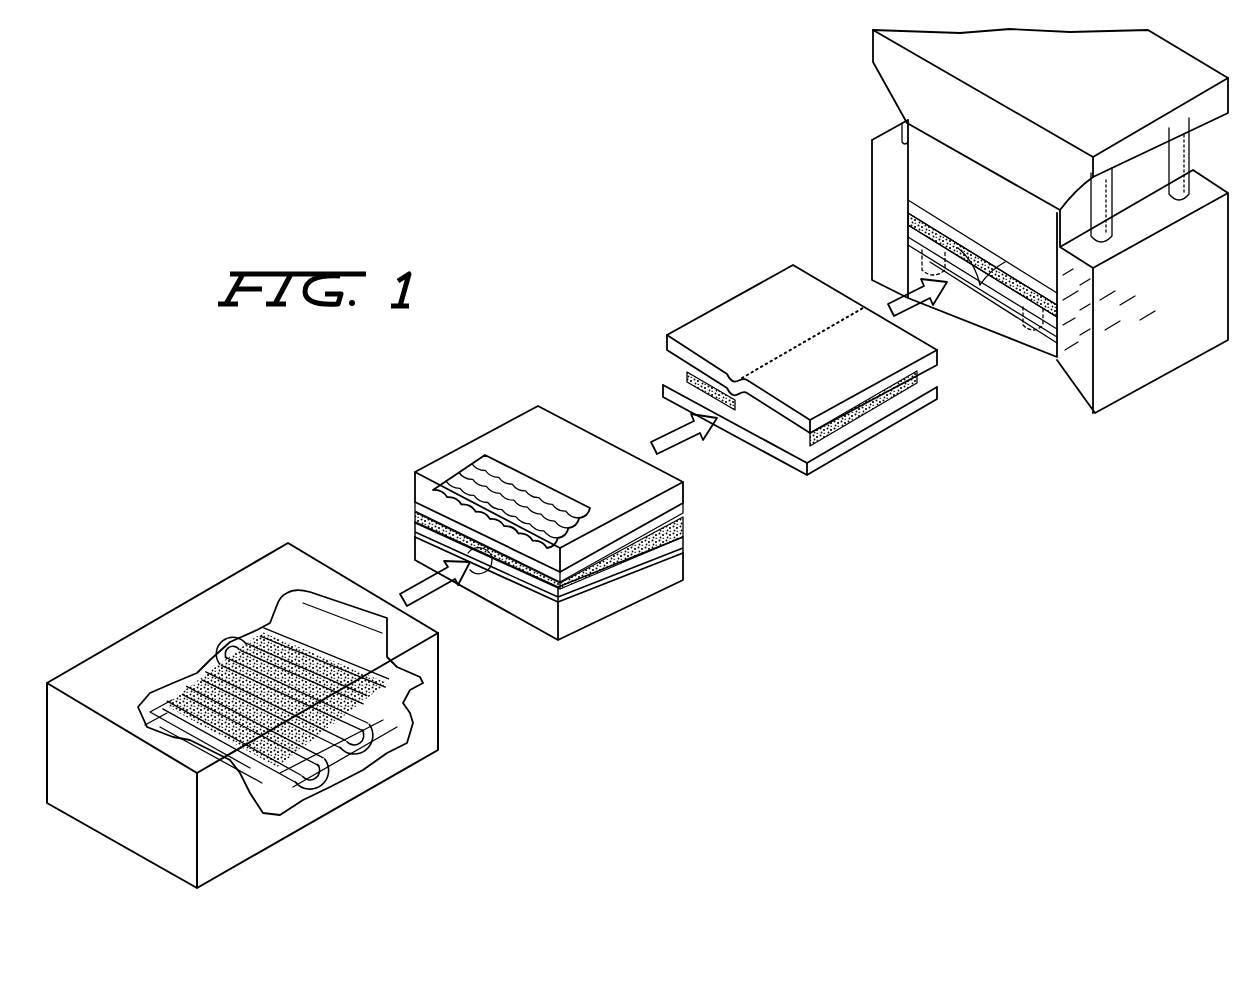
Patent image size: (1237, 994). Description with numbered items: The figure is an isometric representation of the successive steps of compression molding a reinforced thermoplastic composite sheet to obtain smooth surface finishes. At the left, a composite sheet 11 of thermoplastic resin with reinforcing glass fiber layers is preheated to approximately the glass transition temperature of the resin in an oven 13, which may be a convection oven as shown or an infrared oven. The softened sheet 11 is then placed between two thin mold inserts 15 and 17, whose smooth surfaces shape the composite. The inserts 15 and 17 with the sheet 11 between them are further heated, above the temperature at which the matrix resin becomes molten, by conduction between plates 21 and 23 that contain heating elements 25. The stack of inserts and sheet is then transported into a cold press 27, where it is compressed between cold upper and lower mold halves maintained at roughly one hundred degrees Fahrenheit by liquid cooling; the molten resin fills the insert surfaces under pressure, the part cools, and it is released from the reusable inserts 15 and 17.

The composite sheet 11 is at (387, 704).
The oven 13 is at (220, 608).
The mold insert 15 is at (683, 508).
The mold insert 17 is at (683, 542).
The plate 21 is at (672, 495).
The plate 23 is at (670, 573).
The heating elements 25 is at (523, 487).
The cold press 27 is at (850, 202).